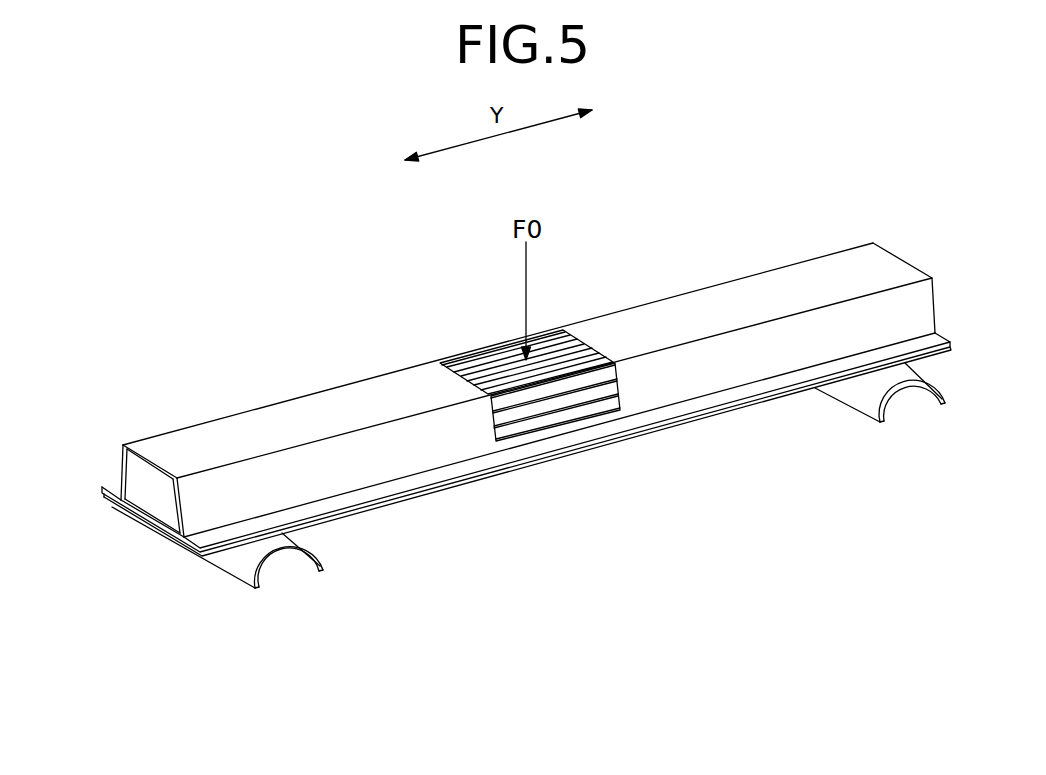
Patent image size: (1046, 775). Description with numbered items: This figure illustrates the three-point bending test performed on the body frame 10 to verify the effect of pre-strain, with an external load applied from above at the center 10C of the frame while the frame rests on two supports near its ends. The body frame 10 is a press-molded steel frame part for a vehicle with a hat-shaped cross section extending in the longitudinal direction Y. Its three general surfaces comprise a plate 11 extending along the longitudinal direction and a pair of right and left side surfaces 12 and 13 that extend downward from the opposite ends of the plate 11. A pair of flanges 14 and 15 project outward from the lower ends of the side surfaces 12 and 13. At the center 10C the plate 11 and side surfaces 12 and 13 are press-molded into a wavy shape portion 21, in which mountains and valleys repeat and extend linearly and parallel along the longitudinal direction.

The body frame 10 is at (267, 258).
The center of the body frame 10C is at (480, 323).
The plate 11 is at (248, 428).
The side surface 12 is at (195, 500).
The side surface 13 is at (120, 465).
The flange 14 is at (224, 528).
The flange 15 is at (108, 486).
The wavy shape portion 21 is at (552, 325).